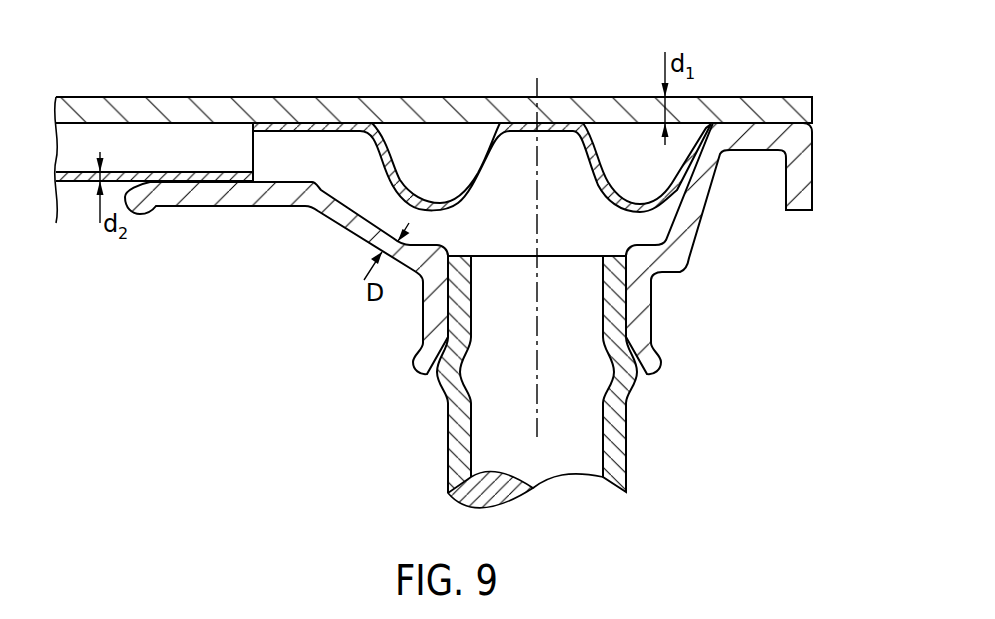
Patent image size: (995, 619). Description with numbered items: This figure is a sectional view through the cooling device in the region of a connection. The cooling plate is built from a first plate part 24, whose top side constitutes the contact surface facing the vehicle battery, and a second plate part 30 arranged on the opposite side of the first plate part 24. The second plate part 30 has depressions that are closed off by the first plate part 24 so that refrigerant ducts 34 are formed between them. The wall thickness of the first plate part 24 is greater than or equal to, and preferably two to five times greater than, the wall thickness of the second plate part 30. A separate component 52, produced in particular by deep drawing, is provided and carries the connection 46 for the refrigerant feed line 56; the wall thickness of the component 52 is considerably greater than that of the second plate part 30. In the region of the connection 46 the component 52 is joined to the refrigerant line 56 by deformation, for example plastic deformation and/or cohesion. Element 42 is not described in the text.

The first plate part 24 is at (200, 107).
The second plate part 30 is at (433, 202).
The refrigerant ducts 34 is at (131, 143).
The retaining cap 42 is at (302, 160).
The connection 46 is at (627, 317).
The component 52 is at (207, 192).
The refrigerant feed line 56 is at (613, 432).